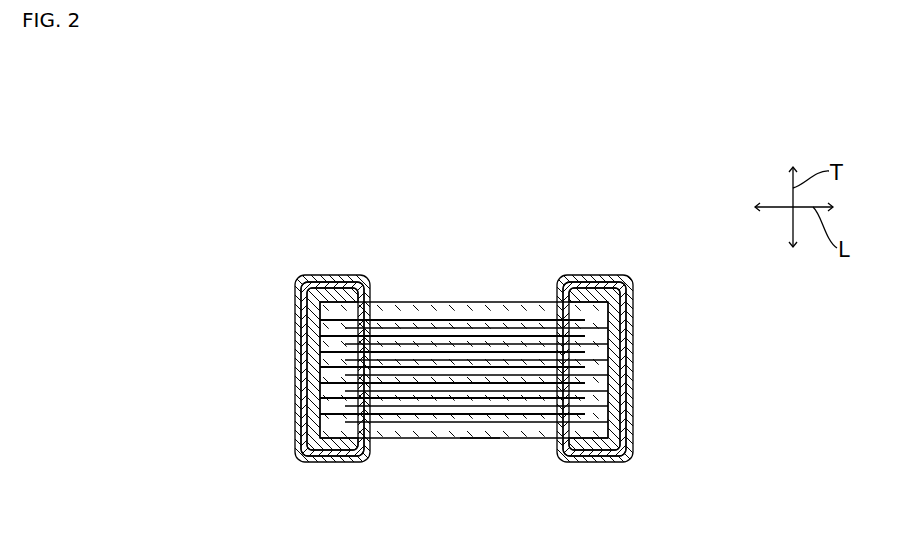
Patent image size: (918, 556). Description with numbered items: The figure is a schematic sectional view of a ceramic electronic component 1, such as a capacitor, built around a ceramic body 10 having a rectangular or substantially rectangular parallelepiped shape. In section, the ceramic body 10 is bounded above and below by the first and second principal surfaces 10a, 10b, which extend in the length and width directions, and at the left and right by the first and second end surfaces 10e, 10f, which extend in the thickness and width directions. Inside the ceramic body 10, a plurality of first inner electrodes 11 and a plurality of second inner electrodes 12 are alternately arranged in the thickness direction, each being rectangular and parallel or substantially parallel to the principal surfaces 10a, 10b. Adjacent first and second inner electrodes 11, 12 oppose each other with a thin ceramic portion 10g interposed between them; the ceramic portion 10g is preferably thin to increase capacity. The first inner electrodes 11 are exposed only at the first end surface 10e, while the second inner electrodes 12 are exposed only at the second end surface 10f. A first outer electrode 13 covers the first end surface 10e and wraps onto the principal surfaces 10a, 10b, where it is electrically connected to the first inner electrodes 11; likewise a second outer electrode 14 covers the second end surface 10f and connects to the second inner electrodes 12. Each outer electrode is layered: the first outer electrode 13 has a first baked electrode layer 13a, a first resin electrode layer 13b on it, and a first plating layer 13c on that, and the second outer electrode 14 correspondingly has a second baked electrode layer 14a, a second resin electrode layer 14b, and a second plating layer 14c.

The ceramic electronic component 1 is at (632, 258).
The ceramic body 10 is at (512, 302).
The first principal surface 10a is at (393, 302).
The second principal surface 10b is at (425, 438).
The first end surface 10e is at (320, 417).
The second end surface 10f is at (606, 411).
The ceramic portion 10g is at (478, 438).
The first inner electrode 11 is at (390, 415).
The second inner electrode 12 is at (512, 422).
The first outer electrode 13 is at (295, 388).
The first baked electrode layer 13a is at (308, 320).
The first resin electrode layer 13b is at (302, 370).
The first plating layer 13c is at (297, 380).
The second outer electrode 14 is at (634, 393).
The second baked electrode layer 14a is at (622, 303).
The second resin electrode layer 14b is at (627, 328).
The second plating layer 14c is at (633, 360).